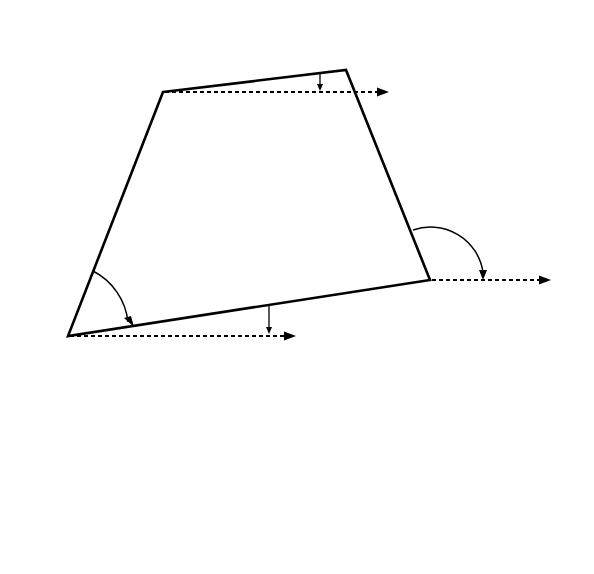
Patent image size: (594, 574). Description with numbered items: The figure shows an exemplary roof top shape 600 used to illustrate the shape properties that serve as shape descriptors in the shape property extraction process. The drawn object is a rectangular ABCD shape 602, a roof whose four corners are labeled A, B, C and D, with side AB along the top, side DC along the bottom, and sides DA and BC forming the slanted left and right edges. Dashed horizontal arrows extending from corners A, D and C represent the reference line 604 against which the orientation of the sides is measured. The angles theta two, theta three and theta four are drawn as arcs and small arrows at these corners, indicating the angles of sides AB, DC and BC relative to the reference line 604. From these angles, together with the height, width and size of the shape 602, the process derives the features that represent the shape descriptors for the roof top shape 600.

The exemplary shape (roof top) 600 is at (266, 34).
The rectangular ABCD shape (roof) 602 is at (151, 178).
The reference line 604 is at (506, 279).